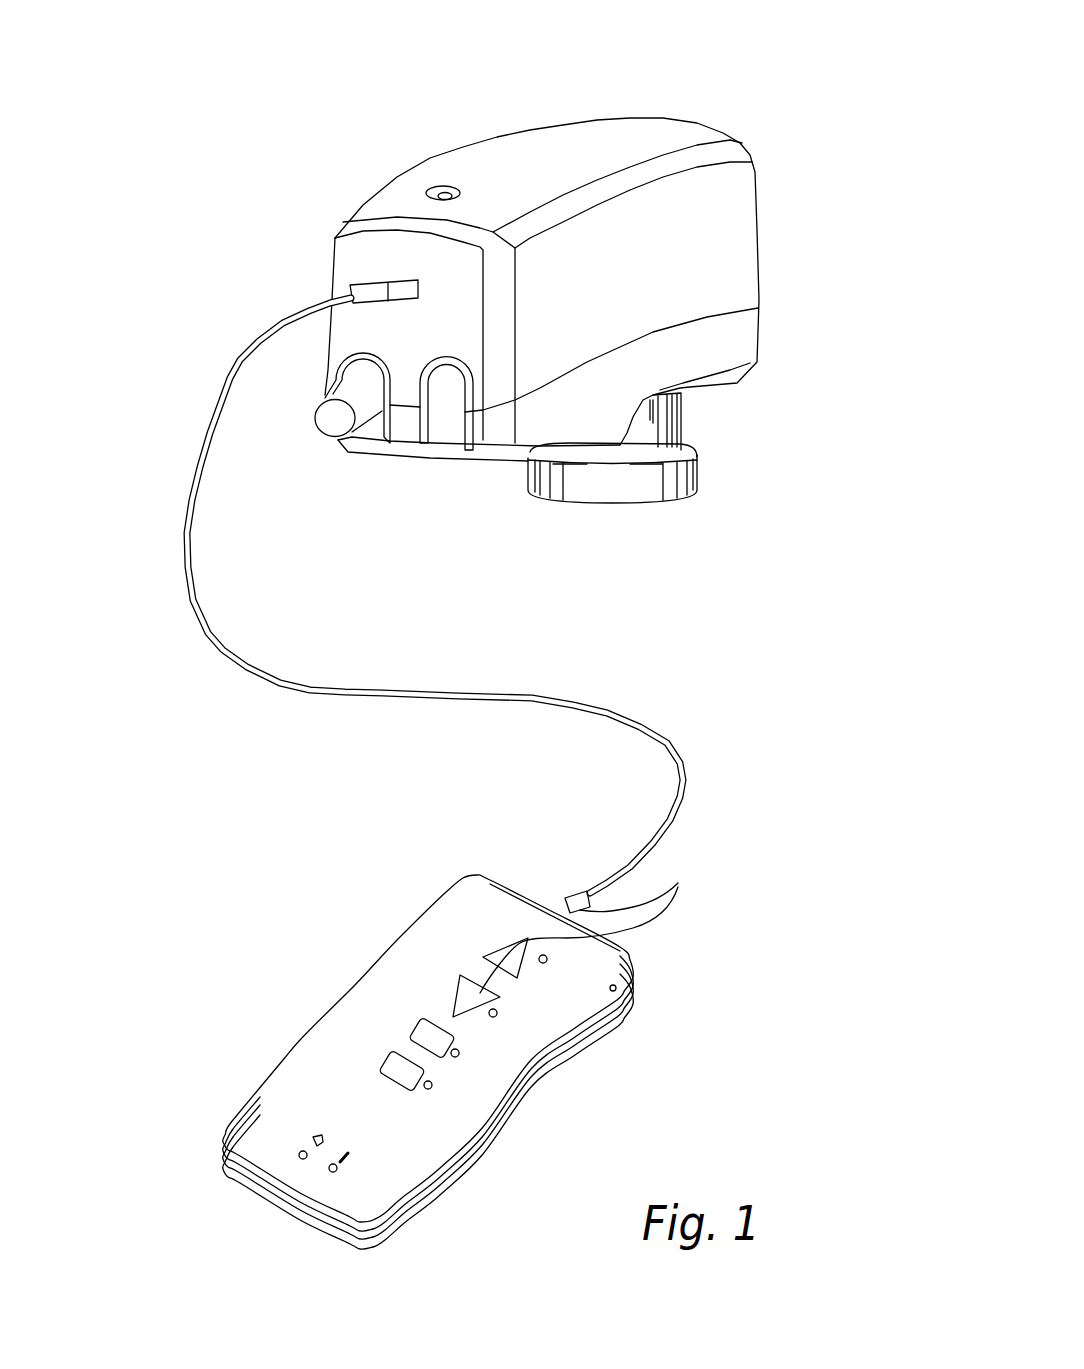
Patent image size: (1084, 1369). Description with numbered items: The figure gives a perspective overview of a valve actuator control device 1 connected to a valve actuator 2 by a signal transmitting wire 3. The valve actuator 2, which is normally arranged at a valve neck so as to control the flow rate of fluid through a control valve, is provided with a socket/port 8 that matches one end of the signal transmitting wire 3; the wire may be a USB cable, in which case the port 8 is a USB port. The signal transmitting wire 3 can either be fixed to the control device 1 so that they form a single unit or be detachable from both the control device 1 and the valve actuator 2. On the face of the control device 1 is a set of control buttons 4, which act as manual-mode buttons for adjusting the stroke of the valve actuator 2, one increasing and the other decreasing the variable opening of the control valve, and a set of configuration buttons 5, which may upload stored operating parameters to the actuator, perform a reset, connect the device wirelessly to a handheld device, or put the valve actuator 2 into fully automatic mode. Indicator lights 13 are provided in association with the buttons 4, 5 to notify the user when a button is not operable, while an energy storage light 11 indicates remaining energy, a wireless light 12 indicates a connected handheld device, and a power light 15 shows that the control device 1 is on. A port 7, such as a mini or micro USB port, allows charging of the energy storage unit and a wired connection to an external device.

The valve actuator control device 1 is at (258, 942).
The valve actuator 2 is at (690, 93).
The signal transmitting wire 3 is at (662, 706).
The control buttons 4 is at (588, 925).
The configuration buttons 5 is at (395, 1052).
The port 7 is at (276, 1212).
The socket/port 8 is at (398, 282).
The energy storage light 11 is at (331, 1172).
The wireless light 12 is at (299, 1154).
The indicator lights 13 is at (432, 1084).
The power light 15 is at (632, 990).